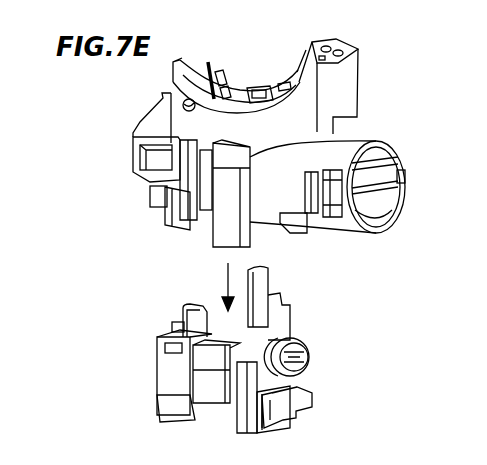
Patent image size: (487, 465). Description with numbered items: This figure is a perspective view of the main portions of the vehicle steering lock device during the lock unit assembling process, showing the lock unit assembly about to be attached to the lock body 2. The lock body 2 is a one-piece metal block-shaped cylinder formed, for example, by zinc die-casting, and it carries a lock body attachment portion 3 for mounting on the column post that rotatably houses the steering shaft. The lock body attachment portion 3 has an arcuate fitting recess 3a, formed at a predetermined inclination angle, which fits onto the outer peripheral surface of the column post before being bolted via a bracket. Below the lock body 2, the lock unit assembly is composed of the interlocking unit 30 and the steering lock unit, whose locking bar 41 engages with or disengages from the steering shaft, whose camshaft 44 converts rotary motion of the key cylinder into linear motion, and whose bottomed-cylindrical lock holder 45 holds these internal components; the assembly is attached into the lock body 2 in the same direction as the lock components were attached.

The lock body 2 is at (386, 108).
The lock body attachment portion 3 is at (192, 64).
The fitting recess 3a is at (234, 86).
The interlocking unit 30 is at (158, 370).
The locking bar 41 is at (272, 278).
The camshaft 44 is at (302, 345).
The lock holder 45 is at (302, 387).